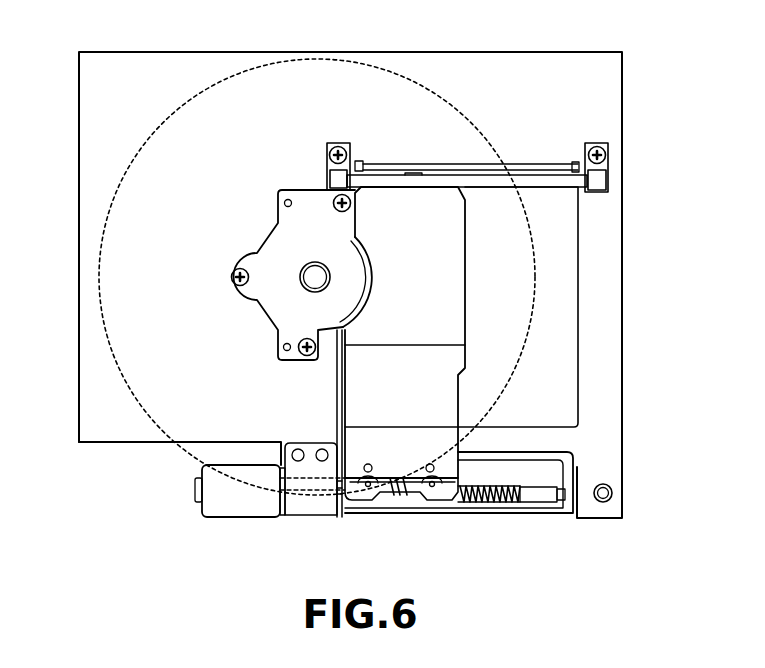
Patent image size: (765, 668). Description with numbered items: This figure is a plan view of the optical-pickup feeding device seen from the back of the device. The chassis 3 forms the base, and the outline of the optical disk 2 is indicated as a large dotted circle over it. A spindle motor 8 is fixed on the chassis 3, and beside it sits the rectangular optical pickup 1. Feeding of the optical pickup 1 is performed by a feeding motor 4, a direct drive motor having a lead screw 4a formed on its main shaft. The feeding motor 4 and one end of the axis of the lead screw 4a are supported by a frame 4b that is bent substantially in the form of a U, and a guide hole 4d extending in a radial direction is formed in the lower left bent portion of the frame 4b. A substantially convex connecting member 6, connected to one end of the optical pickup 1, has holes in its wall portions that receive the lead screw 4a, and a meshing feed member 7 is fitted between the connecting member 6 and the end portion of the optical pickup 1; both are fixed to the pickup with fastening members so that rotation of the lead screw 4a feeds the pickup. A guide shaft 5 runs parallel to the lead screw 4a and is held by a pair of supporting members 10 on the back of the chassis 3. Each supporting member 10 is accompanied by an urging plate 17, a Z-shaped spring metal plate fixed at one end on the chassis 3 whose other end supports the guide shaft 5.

The optical pickup 1 is at (432, 307).
The optical disk 2 is at (207, 452).
The chassis 3 is at (612, 397).
The feeding motor 4 is at (243, 497).
The lead screw 4a is at (477, 497).
The frame 4b is at (543, 513).
The guide hole 4d is at (321, 463).
The guide shaft 5 is at (548, 180).
The connecting member 6 is at (338, 517).
The meshing feed member 7 is at (374, 494).
The spindle motor 8 is at (283, 247).
The supporting member 10 is at (334, 142).
The urging plate 17 is at (330, 180).